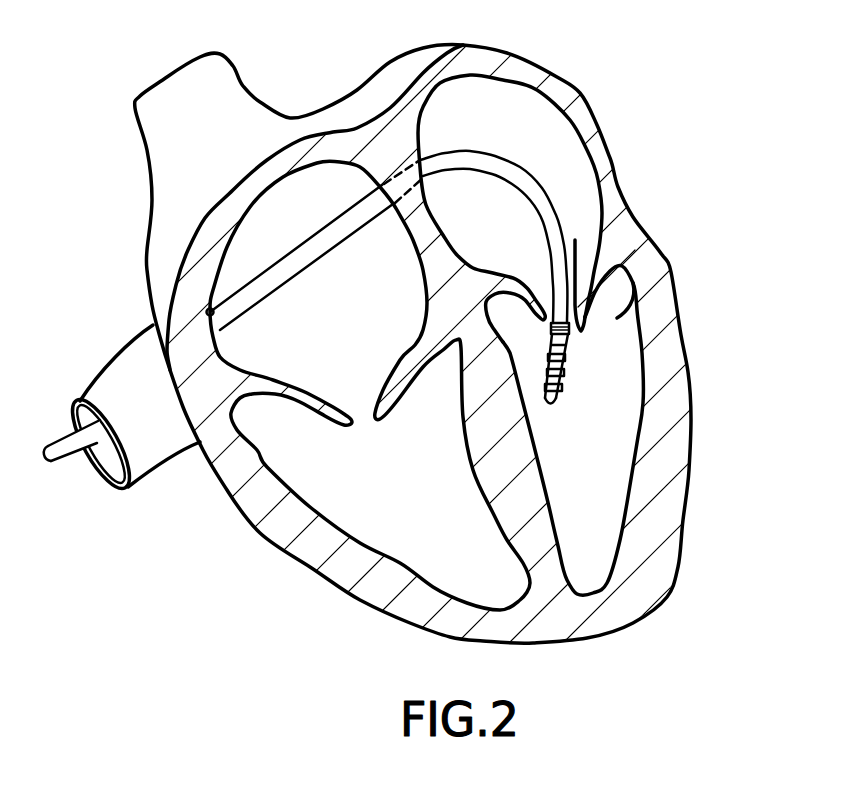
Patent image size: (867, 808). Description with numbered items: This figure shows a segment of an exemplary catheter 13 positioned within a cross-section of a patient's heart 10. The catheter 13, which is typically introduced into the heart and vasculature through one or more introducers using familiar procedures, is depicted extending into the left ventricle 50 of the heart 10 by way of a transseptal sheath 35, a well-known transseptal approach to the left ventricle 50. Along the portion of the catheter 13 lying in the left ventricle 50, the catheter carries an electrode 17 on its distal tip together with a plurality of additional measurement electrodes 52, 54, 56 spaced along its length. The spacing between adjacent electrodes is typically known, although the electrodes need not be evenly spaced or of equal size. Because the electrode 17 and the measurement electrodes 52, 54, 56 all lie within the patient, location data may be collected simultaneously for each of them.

The heart 10 is at (580, 97).
The transseptal sheath 35 is at (490, 155).
The left ventricle 50 is at (620, 313).
The catheter 13 is at (558, 405).
The electrode 17 is at (552, 410).
The measurement electrode 52 is at (560, 390).
The measurement electrode 54 is at (562, 373).
The measurement electrode 56 is at (564, 357).